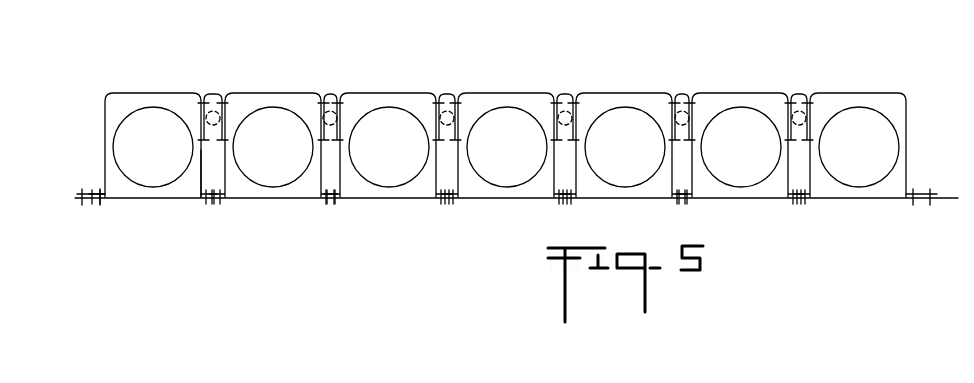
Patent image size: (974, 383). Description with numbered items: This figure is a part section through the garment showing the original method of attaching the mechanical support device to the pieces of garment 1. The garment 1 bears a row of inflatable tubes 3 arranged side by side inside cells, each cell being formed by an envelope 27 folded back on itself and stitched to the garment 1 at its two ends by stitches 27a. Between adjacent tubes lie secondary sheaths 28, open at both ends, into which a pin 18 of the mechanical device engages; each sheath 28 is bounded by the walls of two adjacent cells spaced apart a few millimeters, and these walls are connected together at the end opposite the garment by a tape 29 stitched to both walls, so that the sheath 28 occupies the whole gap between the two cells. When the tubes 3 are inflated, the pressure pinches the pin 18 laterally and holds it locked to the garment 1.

The garment 1 is at (165, 200).
The inflatable tubes 3 is at (136, 113).
The pin 18 is at (214, 110).
The envelopes 27 is at (178, 81).
The stitches 27a is at (97, 204).
The secondary sheaths 28 is at (213, 175).
The tape 29 is at (345, 80).